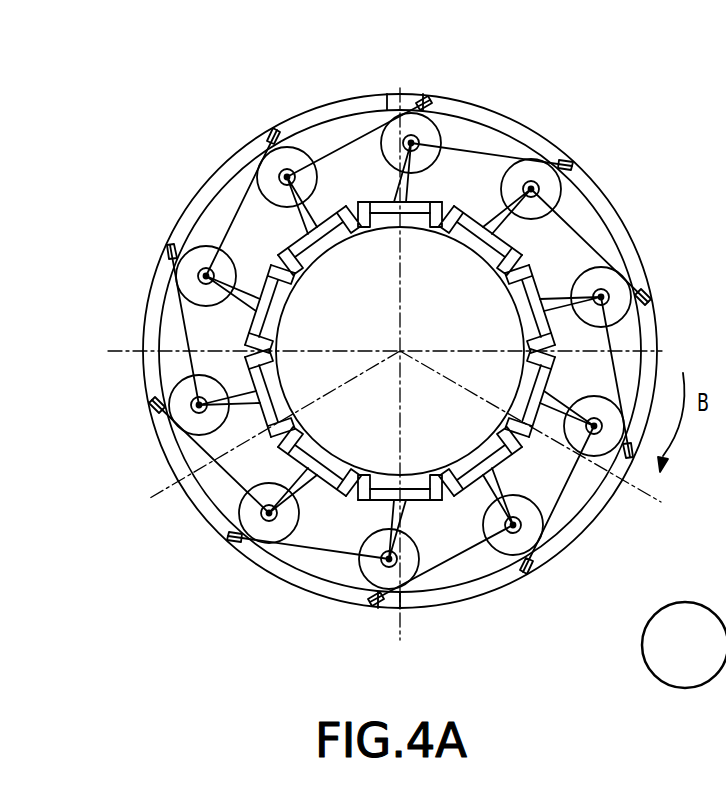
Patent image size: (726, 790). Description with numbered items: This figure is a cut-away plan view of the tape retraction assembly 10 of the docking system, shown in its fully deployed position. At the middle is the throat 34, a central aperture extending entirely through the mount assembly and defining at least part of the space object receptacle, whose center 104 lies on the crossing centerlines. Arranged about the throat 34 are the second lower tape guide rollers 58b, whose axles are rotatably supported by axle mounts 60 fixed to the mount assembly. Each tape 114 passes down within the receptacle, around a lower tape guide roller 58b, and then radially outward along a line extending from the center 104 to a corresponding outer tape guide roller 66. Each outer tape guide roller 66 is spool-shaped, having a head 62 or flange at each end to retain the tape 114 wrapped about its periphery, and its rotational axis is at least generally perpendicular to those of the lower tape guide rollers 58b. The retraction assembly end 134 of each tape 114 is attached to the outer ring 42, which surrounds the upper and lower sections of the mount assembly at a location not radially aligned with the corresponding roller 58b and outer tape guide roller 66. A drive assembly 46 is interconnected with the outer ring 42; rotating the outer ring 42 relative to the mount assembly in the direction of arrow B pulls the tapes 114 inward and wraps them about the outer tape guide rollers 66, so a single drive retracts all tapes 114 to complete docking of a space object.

The tape retraction assembly 10 is at (572, 102).
The throat 34 is at (364, 428).
The outer ring 42 is at (628, 222).
The drive assembly 46 is at (578, 536).
The second lower tape guide rollers 58b is at (322, 248).
The axle mounts 60 is at (366, 228).
The head 62 is at (322, 171).
The outer tape guide rollers 66 is at (314, 132).
The center 104 is at (408, 345).
The tapes 114 is at (470, 132).
The retraction assembly end 134 is at (603, 180).